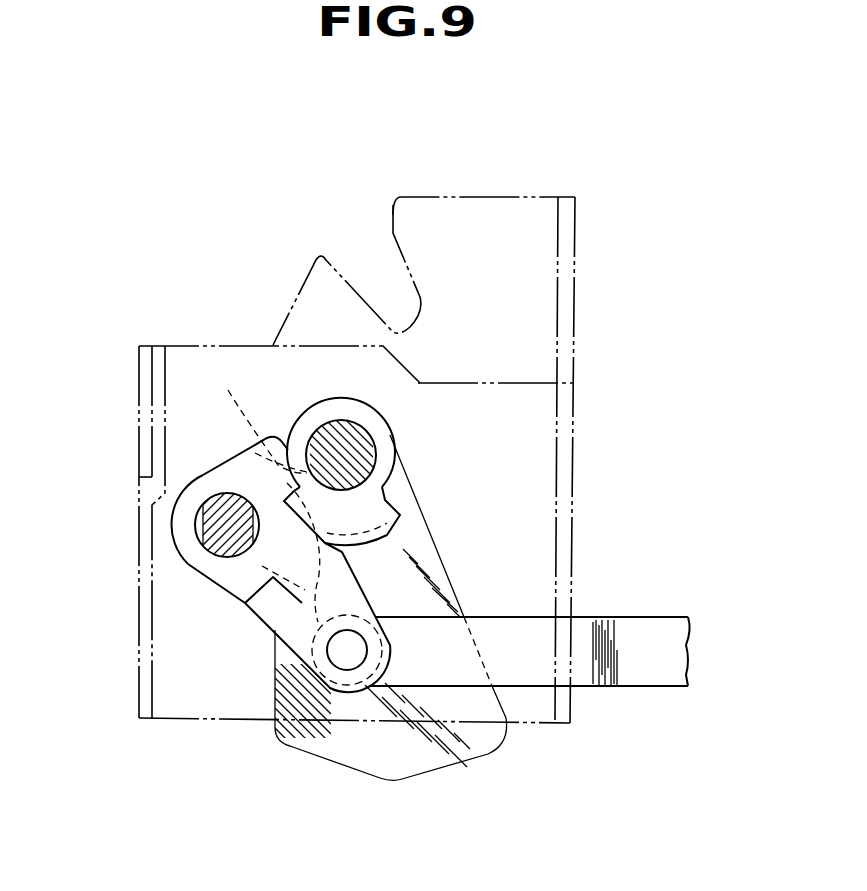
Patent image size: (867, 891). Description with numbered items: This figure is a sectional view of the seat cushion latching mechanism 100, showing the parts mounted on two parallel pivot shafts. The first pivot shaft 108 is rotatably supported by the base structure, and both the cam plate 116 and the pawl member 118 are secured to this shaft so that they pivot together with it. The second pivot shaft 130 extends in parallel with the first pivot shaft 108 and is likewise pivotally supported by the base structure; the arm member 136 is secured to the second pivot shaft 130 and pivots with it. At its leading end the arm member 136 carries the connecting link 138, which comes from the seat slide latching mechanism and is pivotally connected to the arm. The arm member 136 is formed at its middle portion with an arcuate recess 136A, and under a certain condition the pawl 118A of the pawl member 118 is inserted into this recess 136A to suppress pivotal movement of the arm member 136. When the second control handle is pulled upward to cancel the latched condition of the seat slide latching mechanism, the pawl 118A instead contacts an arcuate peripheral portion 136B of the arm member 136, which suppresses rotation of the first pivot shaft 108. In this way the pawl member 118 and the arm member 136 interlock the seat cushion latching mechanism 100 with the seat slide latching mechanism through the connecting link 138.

The seat cushion latching mechanism 100 is at (612, 195).
The first pivot shaft 108 is at (355, 442).
The cam plate 116 is at (398, 772).
The pawl member 118 is at (382, 407).
The pawl 118A is at (387, 535).
The second pivot shaft 130 is at (205, 523).
The arm member 136 is at (228, 467).
The arcuate recess 136A is at (288, 505).
The arcuate peripheral portion 136B is at (263, 495).
The connecting link 138 is at (632, 681).